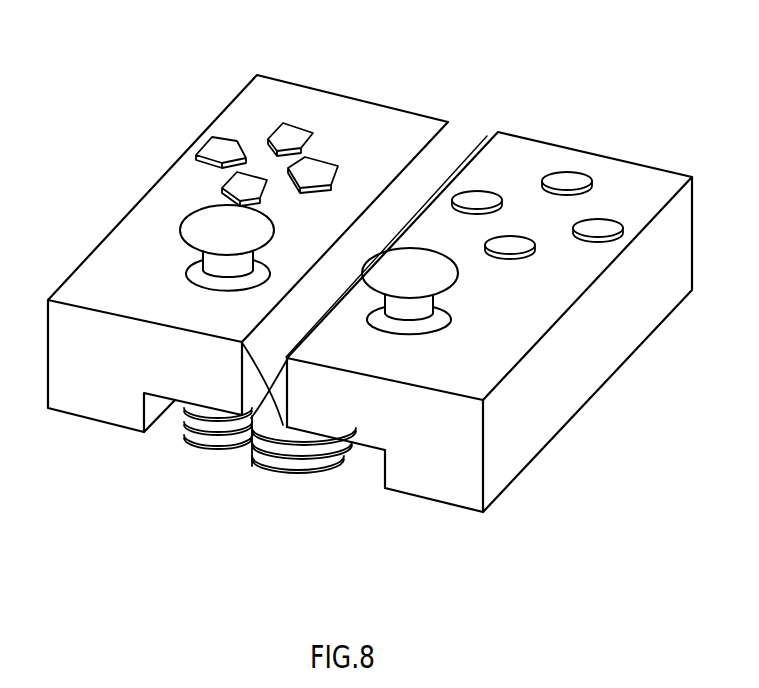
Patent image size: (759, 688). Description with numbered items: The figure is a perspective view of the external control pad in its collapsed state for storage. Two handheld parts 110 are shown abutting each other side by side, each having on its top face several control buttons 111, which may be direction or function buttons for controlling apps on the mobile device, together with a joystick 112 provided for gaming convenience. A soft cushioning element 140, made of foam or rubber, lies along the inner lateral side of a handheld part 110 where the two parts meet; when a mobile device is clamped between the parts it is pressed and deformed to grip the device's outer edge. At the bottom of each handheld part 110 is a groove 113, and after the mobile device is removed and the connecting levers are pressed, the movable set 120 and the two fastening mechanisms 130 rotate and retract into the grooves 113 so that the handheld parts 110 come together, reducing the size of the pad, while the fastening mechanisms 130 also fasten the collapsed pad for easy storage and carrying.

The handheld part 110 is at (338, 108).
The control button 111 is at (220, 145).
The joystick 112 is at (212, 225).
The groove 113 is at (358, 472).
The movable set 120 is at (184, 408).
The fastening mechanism 130 is at (270, 453).
The cushioning element 140 is at (457, 142).